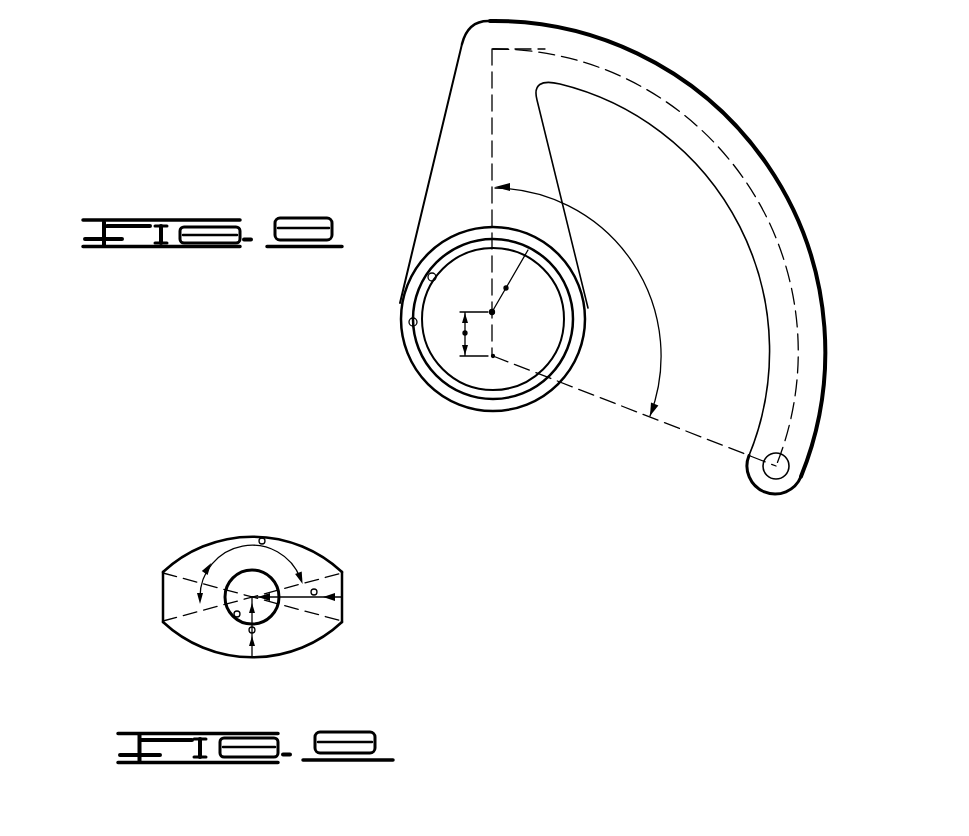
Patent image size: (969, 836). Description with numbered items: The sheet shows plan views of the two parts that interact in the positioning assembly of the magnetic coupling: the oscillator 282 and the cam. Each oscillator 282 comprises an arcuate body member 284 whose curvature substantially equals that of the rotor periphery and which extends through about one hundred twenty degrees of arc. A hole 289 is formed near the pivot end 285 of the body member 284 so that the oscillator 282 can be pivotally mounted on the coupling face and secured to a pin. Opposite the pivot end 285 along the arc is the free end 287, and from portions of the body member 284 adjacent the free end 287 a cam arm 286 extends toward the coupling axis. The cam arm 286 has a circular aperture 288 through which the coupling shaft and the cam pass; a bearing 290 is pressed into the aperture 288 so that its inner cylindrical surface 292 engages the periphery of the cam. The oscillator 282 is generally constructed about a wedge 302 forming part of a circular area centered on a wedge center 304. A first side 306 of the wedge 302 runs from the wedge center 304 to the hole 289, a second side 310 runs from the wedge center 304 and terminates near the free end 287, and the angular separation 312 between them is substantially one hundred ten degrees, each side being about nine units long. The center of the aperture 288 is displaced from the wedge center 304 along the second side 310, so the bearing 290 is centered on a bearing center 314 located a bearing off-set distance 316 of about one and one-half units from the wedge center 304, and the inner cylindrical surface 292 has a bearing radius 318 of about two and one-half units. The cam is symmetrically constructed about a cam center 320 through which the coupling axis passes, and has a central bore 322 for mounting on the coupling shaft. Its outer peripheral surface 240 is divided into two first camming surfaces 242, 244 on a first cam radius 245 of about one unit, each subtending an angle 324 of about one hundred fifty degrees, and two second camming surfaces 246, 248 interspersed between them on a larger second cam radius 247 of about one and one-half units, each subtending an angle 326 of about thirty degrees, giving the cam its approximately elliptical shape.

In FIG. 8, the oscillator 282 is at (778, 182).
In FIG. 8, the arcuate body member 284 is at (801, 270).
In FIG. 8, the pivot end 285 is at (766, 494).
In FIG. 8, the cam arm 286 is at (460, 120).
In FIG. 8, the free end 287 is at (462, 44).
In FIG. 8, the circular aperture 288 is at (409, 322).
In FIG. 8, the hole 289 is at (788, 467).
In FIG. 8, the bearing 290 is at (417, 292).
In FIG. 8, the inner cylindrical surface 292 is at (428, 275).
In FIG. 8, the wedge 302 is at (540, 50).
In FIG. 8, the wedge center 304 is at (492, 357).
In FIG. 8, the first side 306 is at (702, 438).
In FIG. 8, the second side 310 is at (492, 82).
In FIG. 8, the angular separation 312 is at (630, 262).
In FIG. 8, the bearing center 314 is at (495, 315).
In FIG. 8, the bearing off-set distance 316 is at (463, 334).
In FIG. 8, the bearing radius 318 is at (508, 290).
In FIG. 9, the outer peripheral surface 240 is at (253, 591).
In FIG. 9, the first camming surface 242 is at (307, 645).
In FIG. 9, the first camming surface 244 is at (283, 540).
In FIG. 9, the first cam radius 245 is at (256, 633).
In FIG. 9, the second camming surface 246 is at (163, 576).
In FIG. 9, the second cam radius 247 is at (317, 589).
In FIG. 9, the second camming surface 248 is at (343, 602).
In FIG. 9, the cam center 320 is at (252, 597).
In FIG. 9, the central bore 322 is at (236, 617).
In FIG. 9, the angle 324 is at (262, 538).
In FIG. 9, the angle 326 is at (199, 599).